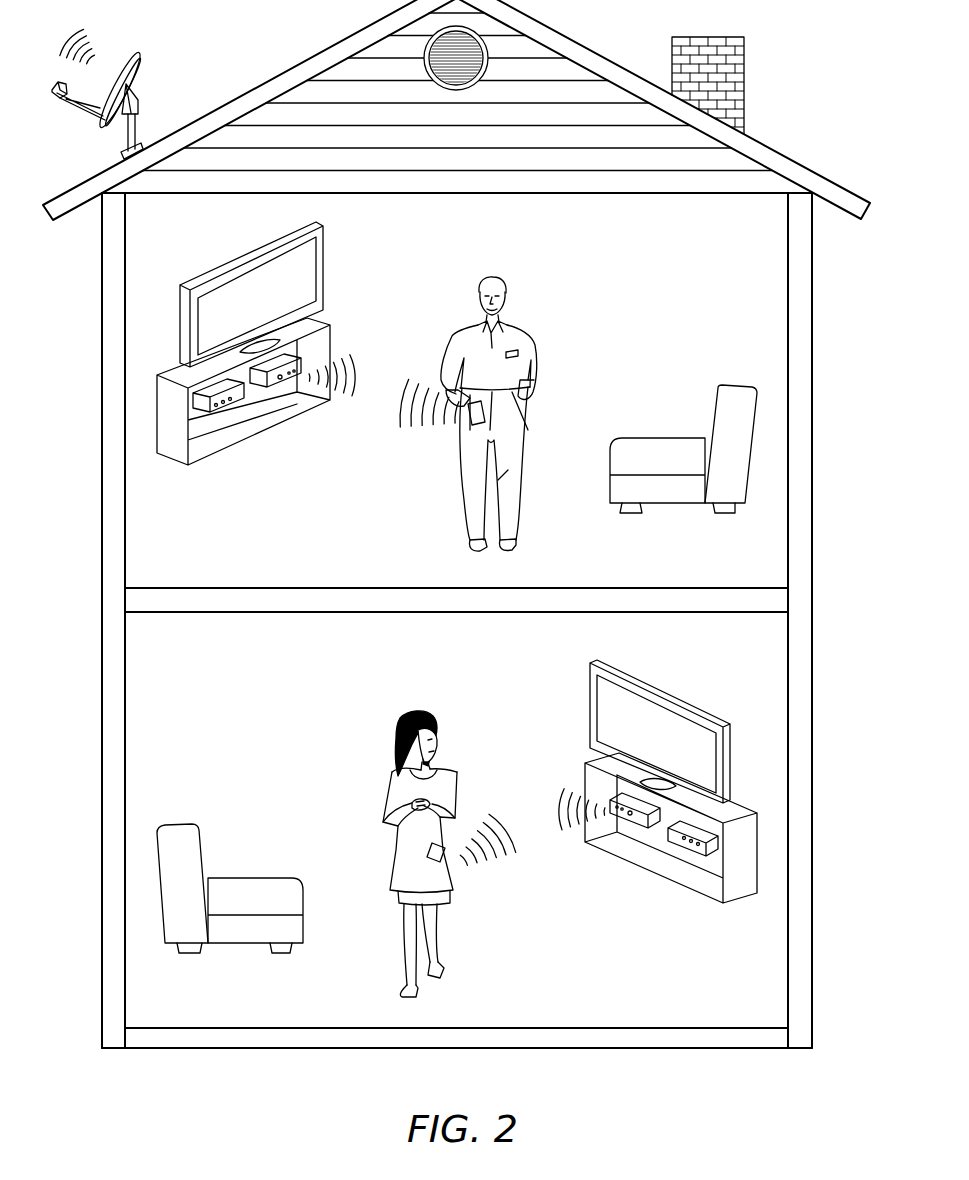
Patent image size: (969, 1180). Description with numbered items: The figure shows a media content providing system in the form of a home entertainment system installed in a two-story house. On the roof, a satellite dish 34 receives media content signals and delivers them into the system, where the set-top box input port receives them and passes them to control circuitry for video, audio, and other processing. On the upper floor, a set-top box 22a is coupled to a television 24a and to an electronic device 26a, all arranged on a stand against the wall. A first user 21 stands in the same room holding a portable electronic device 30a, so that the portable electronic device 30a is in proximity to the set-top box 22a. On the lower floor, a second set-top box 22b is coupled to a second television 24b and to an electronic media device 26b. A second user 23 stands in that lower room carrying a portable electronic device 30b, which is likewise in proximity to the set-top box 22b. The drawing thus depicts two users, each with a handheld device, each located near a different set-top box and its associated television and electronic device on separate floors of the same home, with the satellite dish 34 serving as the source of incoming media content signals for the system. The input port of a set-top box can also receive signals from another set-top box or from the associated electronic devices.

The satellite dish 34 is at (139, 70).
The television 24a is at (323, 262).
The television 24b is at (590, 707).
The set-top box 22a is at (200, 412).
The set-top box 22b is at (710, 851).
The electronic device 26a is at (258, 384).
The electronic media device 26b is at (655, 824).
The first user 21 is at (513, 333).
The second user 23 is at (398, 785).
The portable electronic device 30a is at (468, 418).
The portable electronic device 30b is at (450, 860).